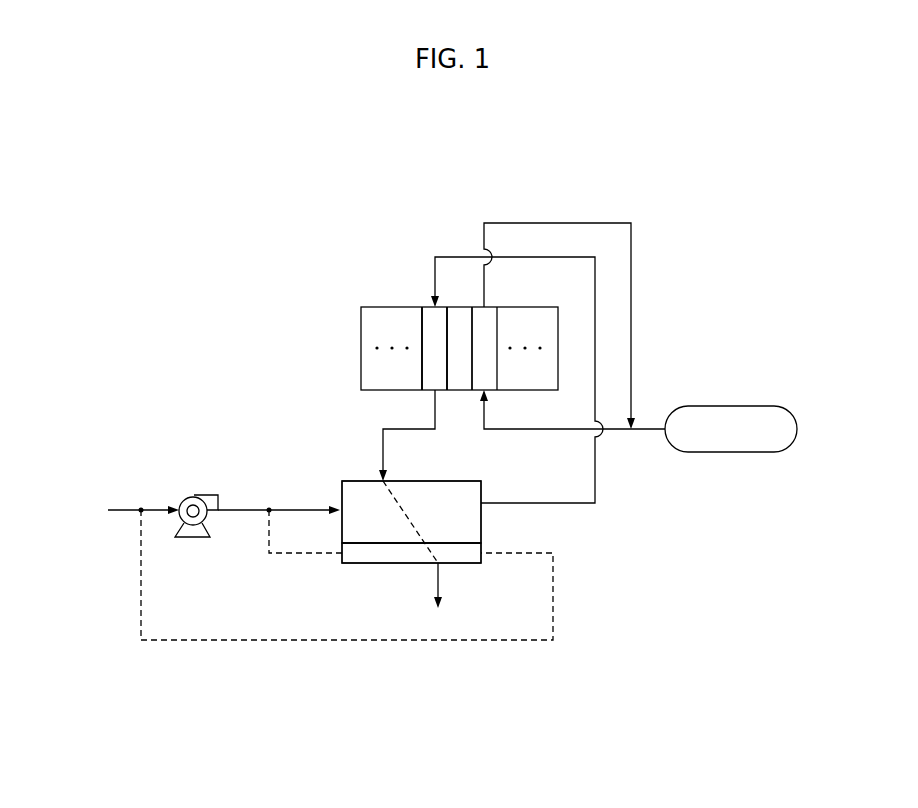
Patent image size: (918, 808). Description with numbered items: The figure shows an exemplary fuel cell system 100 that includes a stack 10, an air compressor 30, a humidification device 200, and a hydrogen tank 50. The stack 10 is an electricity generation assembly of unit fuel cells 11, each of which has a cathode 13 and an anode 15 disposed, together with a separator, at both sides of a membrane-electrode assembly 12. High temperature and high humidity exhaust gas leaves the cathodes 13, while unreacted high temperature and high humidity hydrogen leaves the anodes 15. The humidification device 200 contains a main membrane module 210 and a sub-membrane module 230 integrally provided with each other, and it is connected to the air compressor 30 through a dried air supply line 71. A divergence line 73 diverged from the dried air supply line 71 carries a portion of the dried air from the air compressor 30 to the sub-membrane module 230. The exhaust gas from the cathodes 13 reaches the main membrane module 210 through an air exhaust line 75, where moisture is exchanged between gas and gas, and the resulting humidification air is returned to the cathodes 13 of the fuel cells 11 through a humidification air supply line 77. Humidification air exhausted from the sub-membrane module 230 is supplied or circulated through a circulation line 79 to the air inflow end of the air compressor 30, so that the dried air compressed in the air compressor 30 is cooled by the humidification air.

The fuel cell system 100 is at (467, 176).
The stack 10 is at (381, 292).
The fuel cell 11 is at (313, 310).
The membrane-electrode assembly 12 is at (460, 343).
The cathode 13 is at (435, 316).
The anode 15 is at (483, 375).
The air compressor 30 is at (193, 497).
The hydrogen tank 50 is at (730, 452).
The dried air supply line 71 is at (242, 505).
The divergence line 73 is at (292, 553).
The air exhaust line 75 is at (383, 429).
The humidification air supply line 77 is at (595, 474).
The circulation line 79 is at (343, 640).
The humidification device 200 is at (501, 526).
The main membrane module 210 is at (342, 484).
The sub-membrane module 230 is at (387, 563).